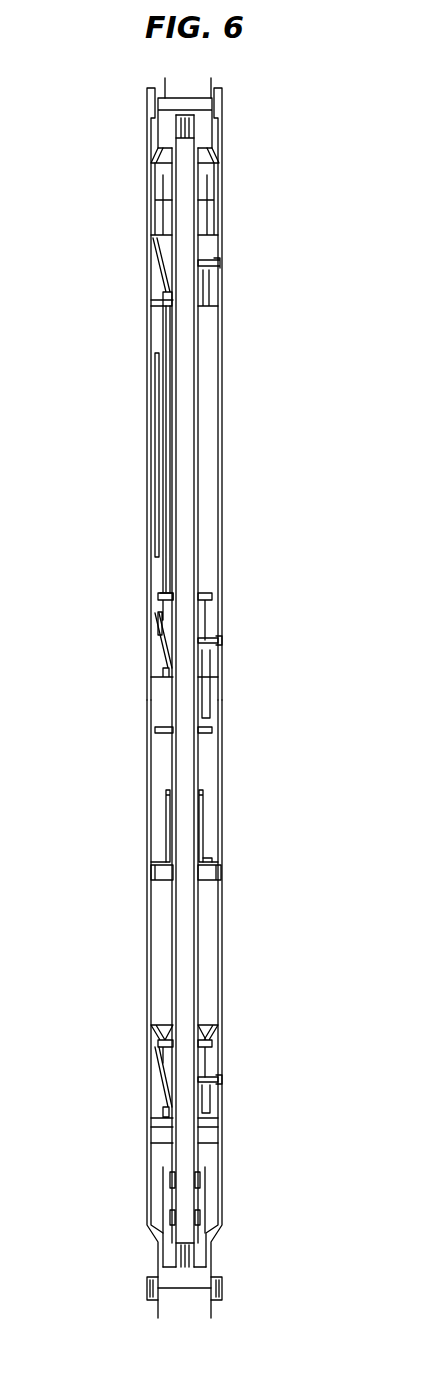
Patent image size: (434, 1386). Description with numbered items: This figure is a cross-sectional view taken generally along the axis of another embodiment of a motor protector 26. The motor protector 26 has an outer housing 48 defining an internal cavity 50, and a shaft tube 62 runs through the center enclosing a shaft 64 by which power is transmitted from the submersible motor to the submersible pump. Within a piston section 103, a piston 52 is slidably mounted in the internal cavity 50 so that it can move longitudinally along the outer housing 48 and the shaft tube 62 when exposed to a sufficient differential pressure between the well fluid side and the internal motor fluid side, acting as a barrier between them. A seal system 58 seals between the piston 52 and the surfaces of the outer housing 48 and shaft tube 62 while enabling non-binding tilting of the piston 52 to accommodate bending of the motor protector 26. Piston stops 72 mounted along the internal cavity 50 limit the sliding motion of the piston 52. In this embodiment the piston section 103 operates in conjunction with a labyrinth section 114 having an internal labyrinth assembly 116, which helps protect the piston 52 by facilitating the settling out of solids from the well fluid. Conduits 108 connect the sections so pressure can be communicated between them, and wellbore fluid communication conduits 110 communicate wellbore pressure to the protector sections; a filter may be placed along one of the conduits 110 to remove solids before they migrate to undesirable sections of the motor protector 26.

The motor protector 26 is at (122, 150).
The wellbore fluid communication conduits 110 is at (150, 262).
The internal labyrinth assembly 116 is at (162, 430).
The labyrinth section 114 is at (235, 421).
The conduits 108 is at (155, 638).
The piston stops 72 is at (212, 732).
The piston section 103 is at (135, 797).
The internal cavity 50 is at (157, 832).
The seal system 58 is at (203, 797).
The piston 52 is at (210, 865).
The outer housing 48 is at (148, 950).
The shaft tube 62 is at (200, 969).
The shaft 64 is at (185, 992).